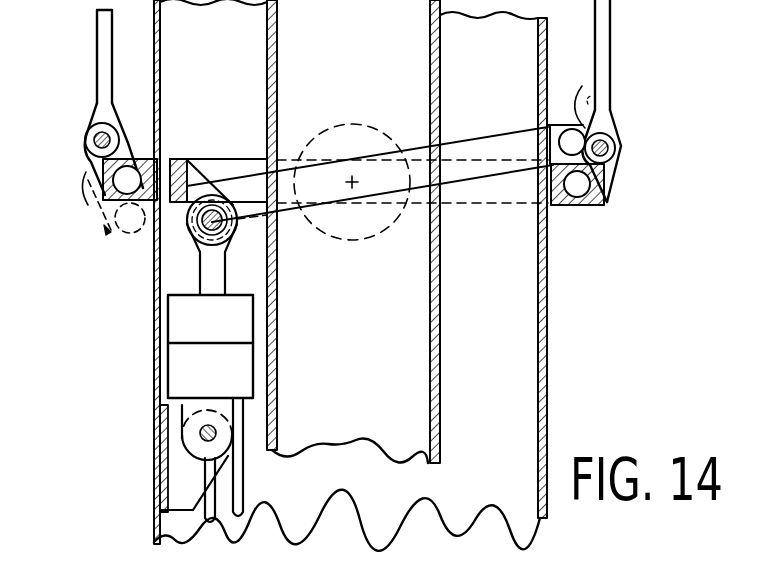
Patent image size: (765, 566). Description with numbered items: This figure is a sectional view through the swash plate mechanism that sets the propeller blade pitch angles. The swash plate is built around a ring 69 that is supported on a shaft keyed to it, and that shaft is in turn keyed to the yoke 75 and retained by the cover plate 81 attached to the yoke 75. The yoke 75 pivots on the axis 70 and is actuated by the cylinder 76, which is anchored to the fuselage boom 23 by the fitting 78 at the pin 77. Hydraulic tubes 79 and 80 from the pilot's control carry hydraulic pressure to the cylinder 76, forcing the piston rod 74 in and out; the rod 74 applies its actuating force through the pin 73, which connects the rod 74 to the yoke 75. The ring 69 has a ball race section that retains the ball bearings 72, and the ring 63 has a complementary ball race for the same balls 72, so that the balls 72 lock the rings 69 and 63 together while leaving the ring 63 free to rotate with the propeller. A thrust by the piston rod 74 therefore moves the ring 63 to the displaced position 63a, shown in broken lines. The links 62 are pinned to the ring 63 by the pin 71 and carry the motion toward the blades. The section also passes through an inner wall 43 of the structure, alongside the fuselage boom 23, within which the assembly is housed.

The fuselage boom 23 is at (155, 423).
The inner tube wall 43 is at (440, 287).
The links 62 is at (97, 43).
The ring 63 is at (102, 175).
The position of ring 63a is at (118, 234).
The ring 69 is at (145, 160).
The axis 70 is at (355, 190).
The pin 71 is at (85, 140).
The ball bearings 72 is at (103, 200).
The pin 73 is at (205, 224).
The piston rod 74 is at (208, 277).
The yoke 75 is at (230, 168).
The cylinder 76 is at (185, 375).
The pin 77 is at (203, 438).
The fitting 78 is at (185, 497).
The hydraulic tube 79 is at (247, 488).
The hydraulic tube 80 is at (203, 522).
The cover plate 81 is at (378, 124).